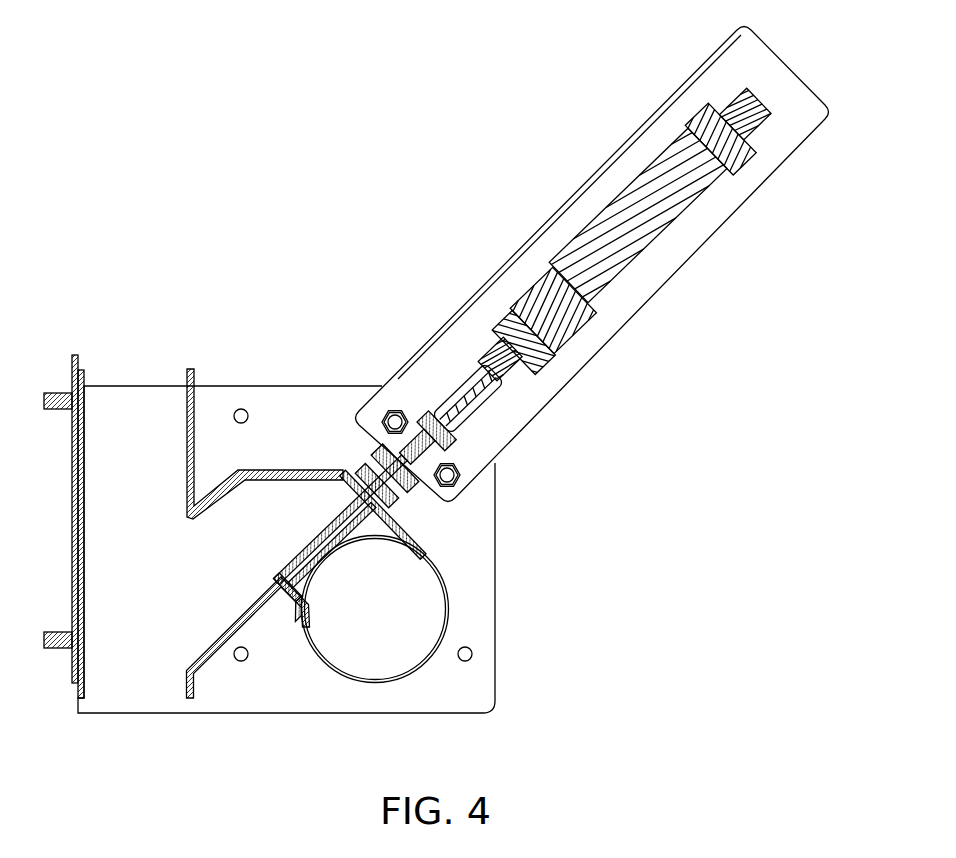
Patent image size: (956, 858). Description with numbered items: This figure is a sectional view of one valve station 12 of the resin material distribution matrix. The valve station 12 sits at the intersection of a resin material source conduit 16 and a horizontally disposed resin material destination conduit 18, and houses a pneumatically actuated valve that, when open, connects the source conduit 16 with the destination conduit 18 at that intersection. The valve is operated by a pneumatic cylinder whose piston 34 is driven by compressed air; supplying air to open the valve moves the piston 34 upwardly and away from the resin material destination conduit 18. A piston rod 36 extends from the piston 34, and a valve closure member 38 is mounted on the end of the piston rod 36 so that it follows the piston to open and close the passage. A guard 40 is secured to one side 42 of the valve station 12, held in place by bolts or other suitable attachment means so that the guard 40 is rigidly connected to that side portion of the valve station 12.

The valve station 12 is at (592, 252).
The resin material source conduit 16 is at (127, 395).
The resin material destination conduit 18 is at (447, 593).
The piston 34 is at (633, 262).
The piston rod 36 is at (483, 407).
The valve closure member 38 is at (302, 570).
The guard 40 is at (773, 80).
The side 42 is at (773, 150).